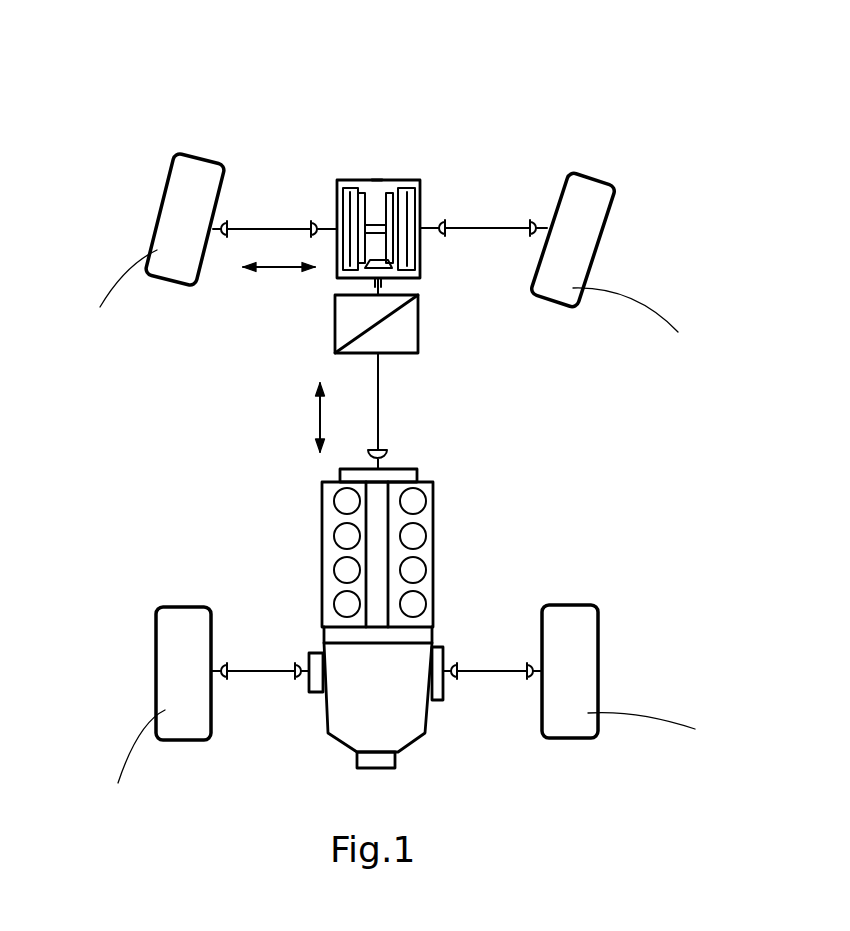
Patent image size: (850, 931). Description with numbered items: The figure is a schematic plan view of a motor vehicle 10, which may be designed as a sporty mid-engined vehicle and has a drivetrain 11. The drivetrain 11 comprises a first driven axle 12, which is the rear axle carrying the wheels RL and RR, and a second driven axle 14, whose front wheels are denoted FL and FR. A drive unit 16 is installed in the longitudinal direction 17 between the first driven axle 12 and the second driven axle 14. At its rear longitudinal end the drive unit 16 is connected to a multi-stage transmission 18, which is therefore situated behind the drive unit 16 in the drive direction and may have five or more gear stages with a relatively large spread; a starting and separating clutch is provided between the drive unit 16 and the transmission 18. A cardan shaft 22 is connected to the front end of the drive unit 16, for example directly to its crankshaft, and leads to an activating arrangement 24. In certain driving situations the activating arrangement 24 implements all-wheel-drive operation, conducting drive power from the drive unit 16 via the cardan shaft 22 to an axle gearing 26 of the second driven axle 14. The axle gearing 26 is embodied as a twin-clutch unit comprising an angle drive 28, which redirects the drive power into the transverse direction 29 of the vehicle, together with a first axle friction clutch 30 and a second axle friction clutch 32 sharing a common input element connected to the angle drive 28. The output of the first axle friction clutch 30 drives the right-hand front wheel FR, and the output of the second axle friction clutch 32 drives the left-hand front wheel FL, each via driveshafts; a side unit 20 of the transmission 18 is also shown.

The motor vehicle 10 is at (645, 162).
The drivetrain 11 is at (541, 152).
The first driven axle 12 is at (626, 657).
The second driven axle 14 is at (633, 251).
The drive unit 16 is at (456, 522).
The longitudinal direction 17 is at (320, 420).
The multi-stage transmission 18 is at (443, 738).
The transmission side unit 20 is at (445, 700).
The cardan shaft 22 is at (408, 405).
The activating arrangement 24 is at (316, 344).
The axle gearing 26 is at (430, 165).
The angle drive 28 is at (377, 172).
The transverse direction 29 is at (282, 268).
The first axle friction clutch 30 is at (422, 191).
The second axle friction clutch 32 is at (350, 184).